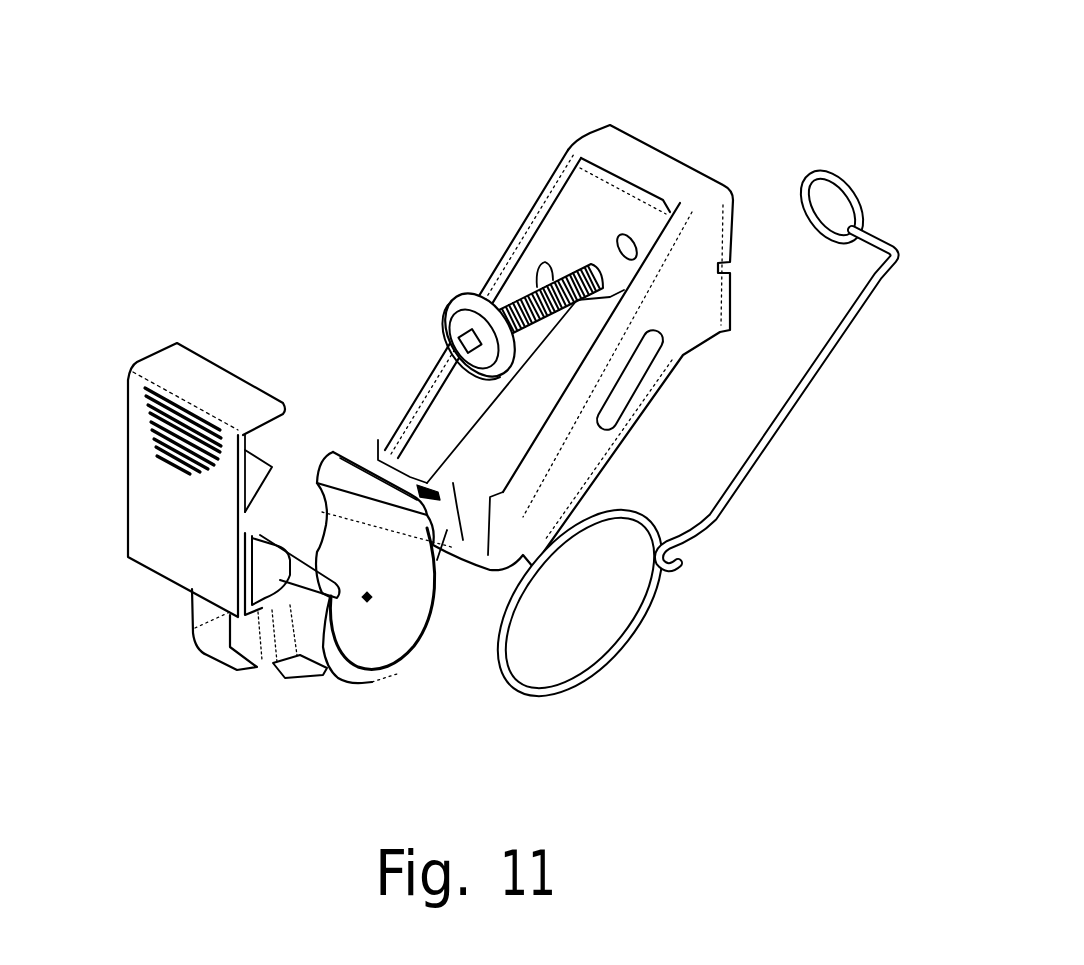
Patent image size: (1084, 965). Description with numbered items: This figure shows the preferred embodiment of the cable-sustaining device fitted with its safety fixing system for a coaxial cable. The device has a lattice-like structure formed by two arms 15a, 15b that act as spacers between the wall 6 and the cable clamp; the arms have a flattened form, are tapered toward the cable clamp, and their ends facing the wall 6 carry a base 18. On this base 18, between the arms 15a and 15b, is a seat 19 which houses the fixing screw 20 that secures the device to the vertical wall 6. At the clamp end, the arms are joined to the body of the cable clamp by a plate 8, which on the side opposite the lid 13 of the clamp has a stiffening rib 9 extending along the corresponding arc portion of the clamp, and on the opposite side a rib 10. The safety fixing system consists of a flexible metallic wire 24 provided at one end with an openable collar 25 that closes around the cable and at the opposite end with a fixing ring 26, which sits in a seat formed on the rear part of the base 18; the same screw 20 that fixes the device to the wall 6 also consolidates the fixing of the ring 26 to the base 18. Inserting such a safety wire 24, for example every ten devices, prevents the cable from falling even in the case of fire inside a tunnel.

The vertical wall 6 is at (386, 455).
The plate 8 is at (470, 551).
The stiffening rib 9 is at (295, 668).
The rib 10 is at (455, 491).
The lid 13 is at (187, 370).
The arm 15a is at (558, 182).
The arm 15b is at (673, 233).
The base 18 is at (613, 148).
The seat 19 is at (625, 245).
The fixing screw 20 is at (462, 311).
The flexible metallic wire 24 is at (769, 541).
The openable collar 25 is at (552, 690).
The fixing ring 26 is at (860, 203).